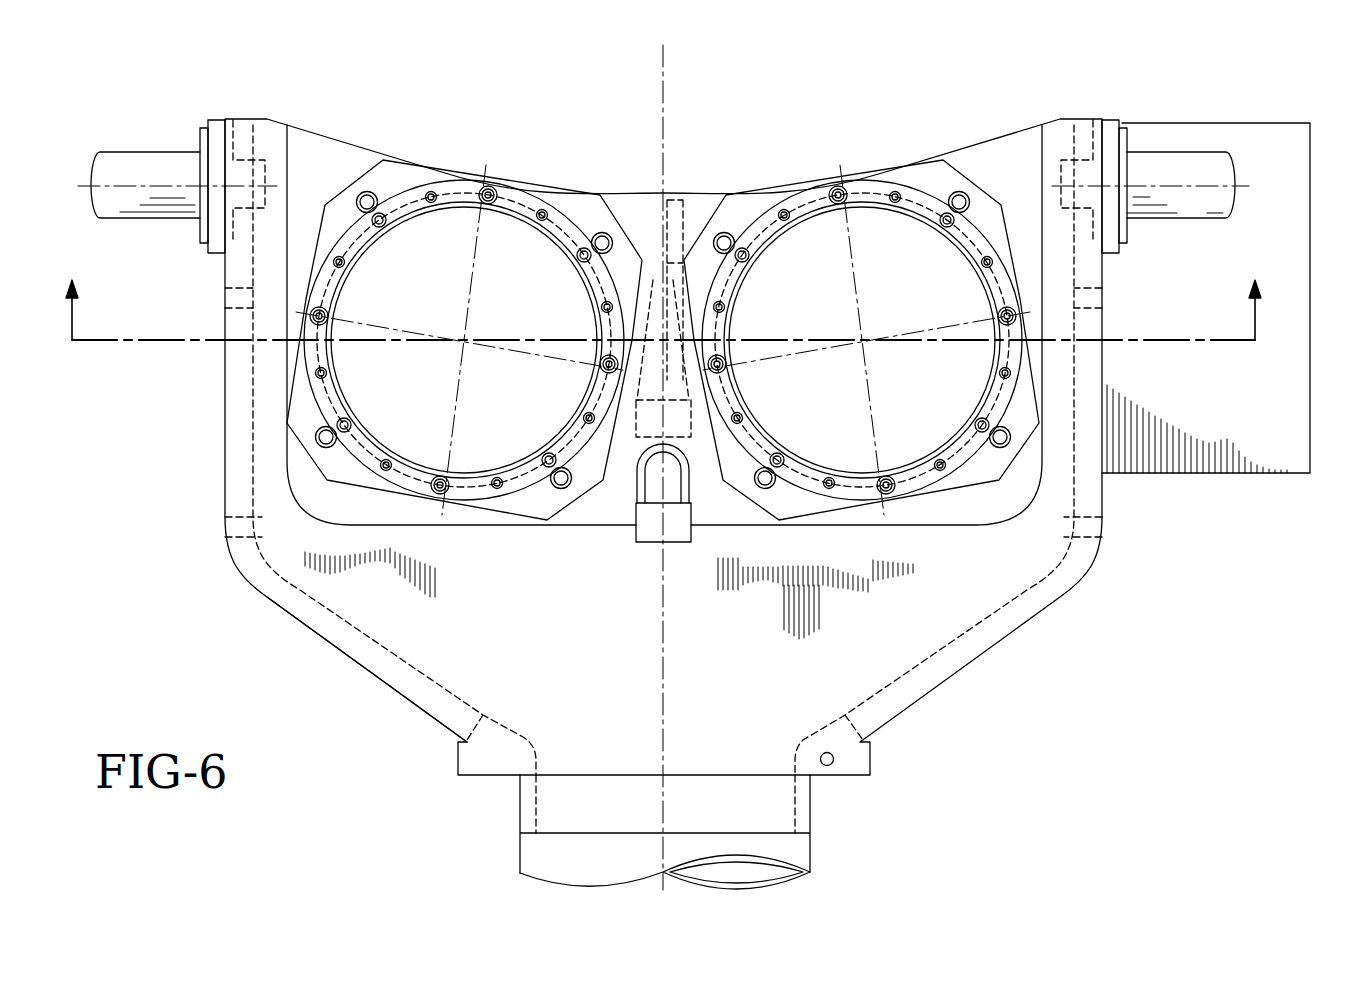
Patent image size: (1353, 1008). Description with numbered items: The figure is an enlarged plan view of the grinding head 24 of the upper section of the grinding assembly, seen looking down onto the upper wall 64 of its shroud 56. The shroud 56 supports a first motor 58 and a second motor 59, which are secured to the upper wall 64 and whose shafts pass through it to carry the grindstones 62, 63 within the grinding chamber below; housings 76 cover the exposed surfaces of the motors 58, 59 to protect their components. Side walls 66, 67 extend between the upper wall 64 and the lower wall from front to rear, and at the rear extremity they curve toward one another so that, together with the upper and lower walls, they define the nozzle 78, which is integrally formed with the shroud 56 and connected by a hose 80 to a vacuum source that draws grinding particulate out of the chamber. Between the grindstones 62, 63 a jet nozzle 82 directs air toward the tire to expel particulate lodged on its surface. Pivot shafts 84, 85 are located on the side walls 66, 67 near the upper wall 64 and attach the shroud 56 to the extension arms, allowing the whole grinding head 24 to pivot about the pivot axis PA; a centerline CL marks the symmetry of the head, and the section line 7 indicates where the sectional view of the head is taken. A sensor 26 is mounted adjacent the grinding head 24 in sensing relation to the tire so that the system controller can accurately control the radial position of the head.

The grinding head 24 is at (288, 104).
The sensor 26 is at (1313, 185).
The shroud 56 is at (419, 623).
The first motor 58 is at (458, 197).
The second motor 59 is at (813, 207).
The grindstone 62 is at (475, 173).
The grindstone 63 is at (853, 177).
The upper wall 64 is at (523, 648).
The side wall 66 is at (243, 384).
The side wall 67 is at (993, 623).
The housings 76 is at (513, 205).
The nozzle 78 is at (778, 803).
The hose 80 is at (575, 863).
The jet nozzle 82 is at (663, 268).
The pivot shaft 84 is at (132, 212).
The pivot shaft 85 is at (1182, 173).
The section line 7- 7 is at (662, 295).
The pivot axis PA is at (157, 185).
The centerline CL is at (668, 82).